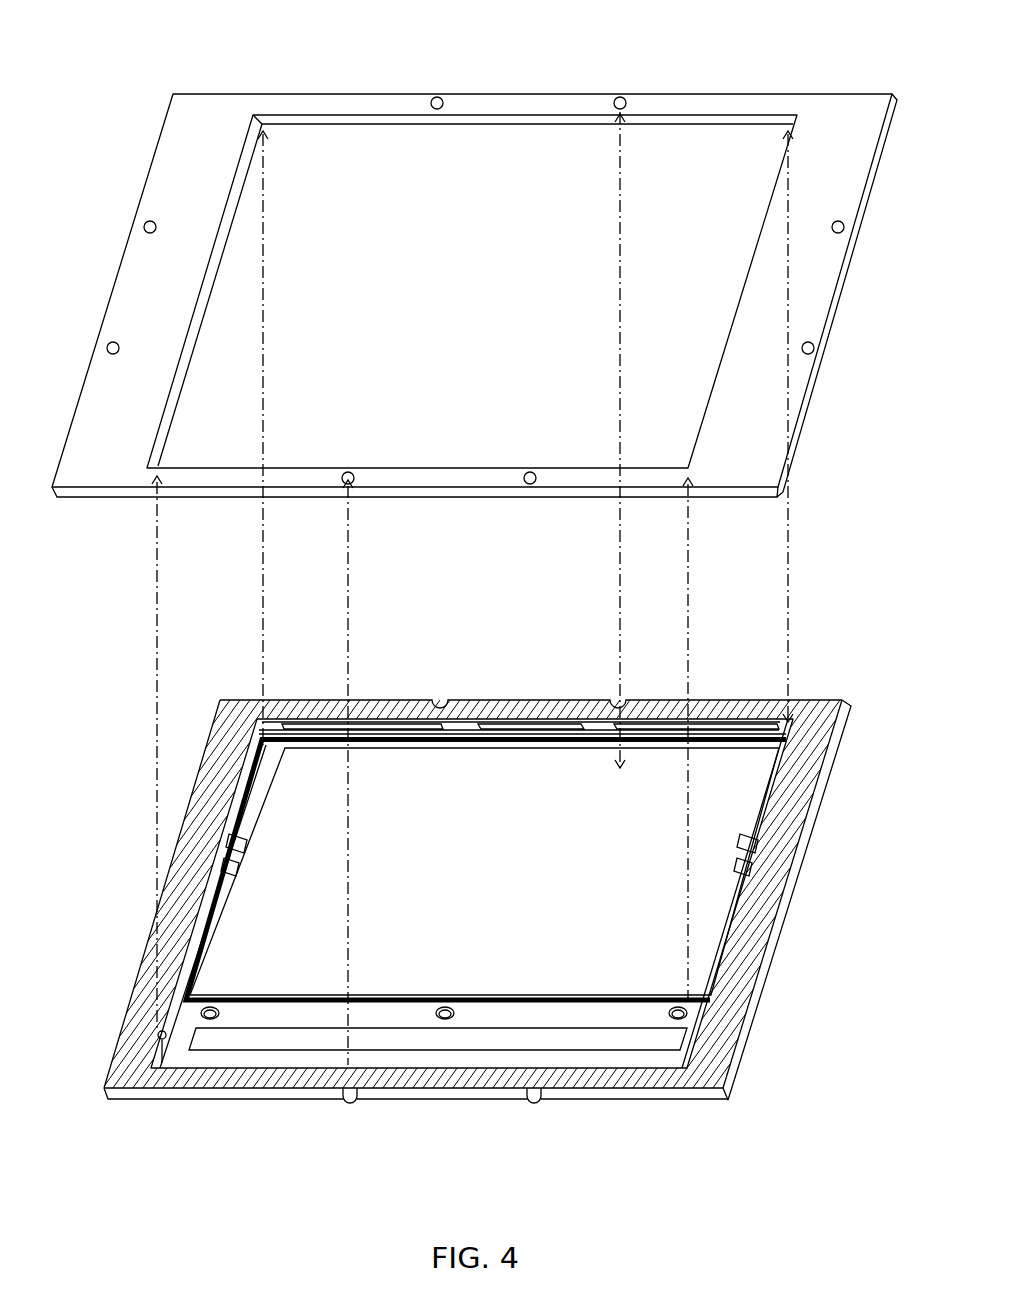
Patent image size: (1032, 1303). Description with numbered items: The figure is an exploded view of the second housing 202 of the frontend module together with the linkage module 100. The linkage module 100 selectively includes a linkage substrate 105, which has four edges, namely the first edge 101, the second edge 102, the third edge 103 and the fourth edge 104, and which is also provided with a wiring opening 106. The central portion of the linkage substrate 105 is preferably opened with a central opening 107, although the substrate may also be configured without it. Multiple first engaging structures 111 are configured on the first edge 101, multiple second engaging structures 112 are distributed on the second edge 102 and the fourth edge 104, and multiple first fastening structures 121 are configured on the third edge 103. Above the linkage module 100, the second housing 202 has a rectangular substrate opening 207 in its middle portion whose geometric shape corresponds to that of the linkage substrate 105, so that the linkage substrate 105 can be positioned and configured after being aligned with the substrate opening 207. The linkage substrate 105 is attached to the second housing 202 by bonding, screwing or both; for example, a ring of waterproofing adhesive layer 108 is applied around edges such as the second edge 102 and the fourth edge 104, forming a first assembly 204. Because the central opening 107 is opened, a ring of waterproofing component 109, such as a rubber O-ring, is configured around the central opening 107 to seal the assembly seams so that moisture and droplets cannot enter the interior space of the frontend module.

The first assembly 204 is at (453, 24).
The second housing 202 is at (828, 111).
The substrate opening 207 is at (472, 291).
The linkage module 100 is at (222, 676).
The first edge 101 is at (508, 685).
The second edge 102 is at (806, 888).
The third edge 103 is at (435, 1108).
The fourth edge 104 is at (134, 948).
The linkage substrate 105 is at (776, 960).
The wiring opening 106 is at (168, 1040).
The central opening 107 is at (474, 893).
The waterproofing adhesive layer 108 is at (735, 1000).
The ring of waterproofing component 109 is at (382, 995).
The first engaging structures 111 is at (532, 727).
The second engaging structures 112 is at (243, 856).
The first fastening structures 121 is at (676, 1004).